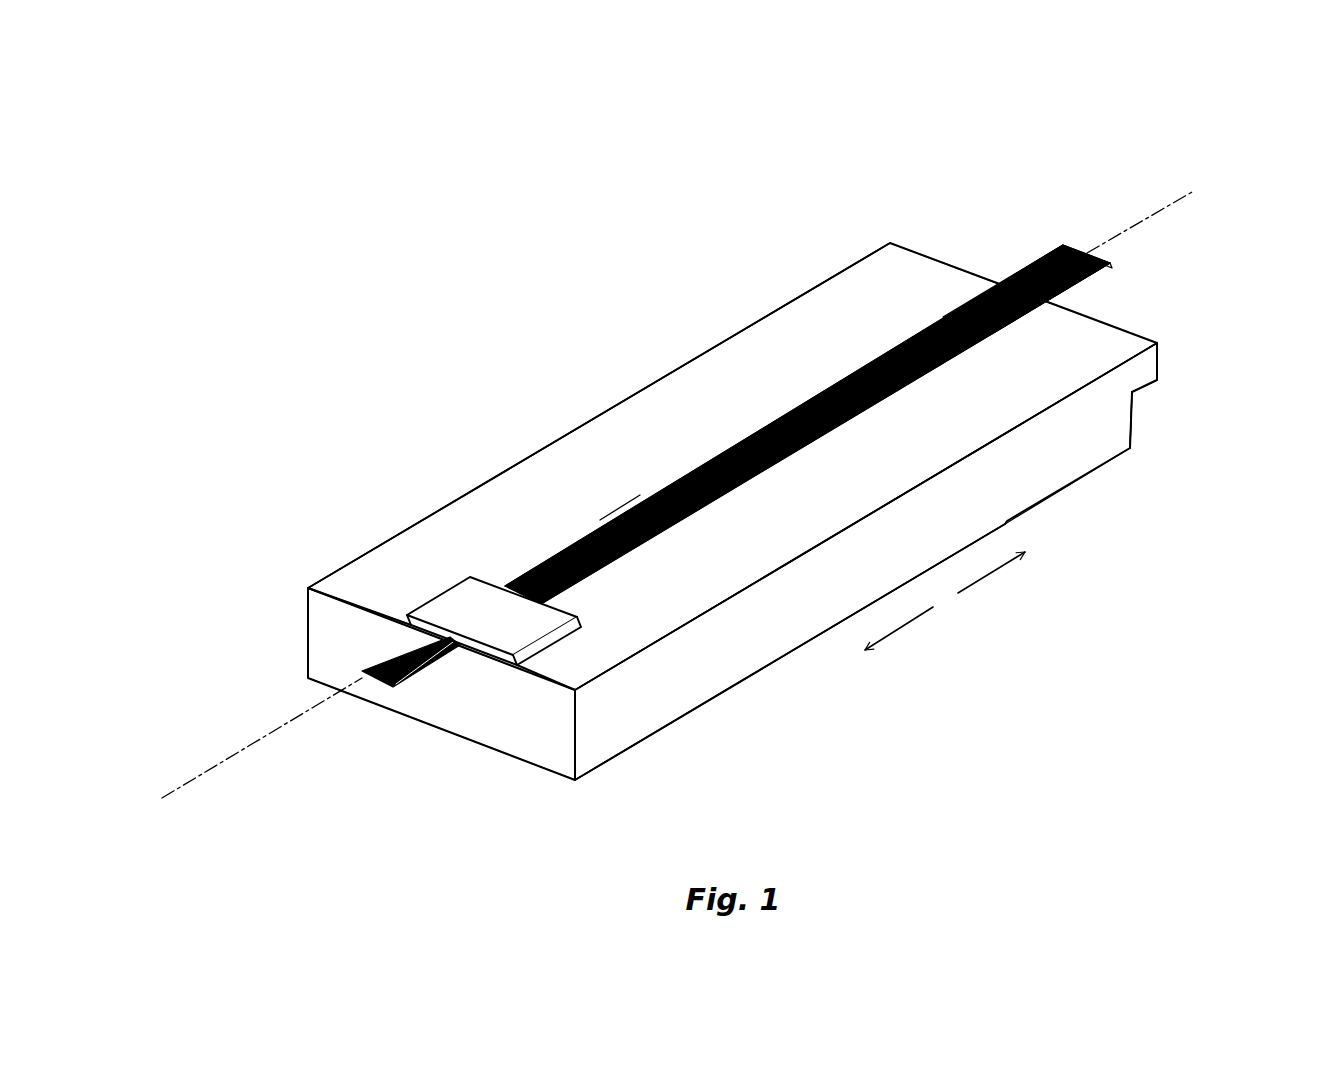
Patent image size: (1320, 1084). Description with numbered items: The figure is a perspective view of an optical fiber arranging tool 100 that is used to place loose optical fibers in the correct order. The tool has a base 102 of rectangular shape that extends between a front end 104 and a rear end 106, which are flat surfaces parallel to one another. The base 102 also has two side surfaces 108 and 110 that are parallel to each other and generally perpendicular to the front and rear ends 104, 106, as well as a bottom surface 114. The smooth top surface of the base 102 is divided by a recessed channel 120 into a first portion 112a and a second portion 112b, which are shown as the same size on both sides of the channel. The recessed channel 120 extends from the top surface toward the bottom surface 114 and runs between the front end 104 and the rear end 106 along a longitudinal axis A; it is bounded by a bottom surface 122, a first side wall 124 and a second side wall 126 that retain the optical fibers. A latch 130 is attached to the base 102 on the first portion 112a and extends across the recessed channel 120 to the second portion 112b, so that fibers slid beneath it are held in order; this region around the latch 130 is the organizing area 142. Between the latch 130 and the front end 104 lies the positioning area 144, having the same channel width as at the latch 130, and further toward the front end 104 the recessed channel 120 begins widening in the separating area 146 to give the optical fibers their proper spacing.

The optical fiber arranging tool 100 is at (702, 460).
The base 102 is at (748, 652).
The front end 104 is at (1137, 410).
The rear end 106 is at (527, 738).
The side surface 108 is at (672, 708).
The side surface 110 is at (667, 370).
The first portion of top surface 112a is at (704, 584).
The second portion of top surface 112b is at (663, 455).
The bottom surface 114 is at (835, 637).
The recessed channel 120 is at (593, 563).
The bottom surface of recessed channel 122 is at (547, 557).
The first side wall 124 is at (817, 437).
The second side wall 126 is at (785, 415).
The latch 130 is at (483, 627).
The organizing area 142 is at (378, 577).
The positioning area 144 is at (575, 452).
The separating area 146 is at (903, 292).